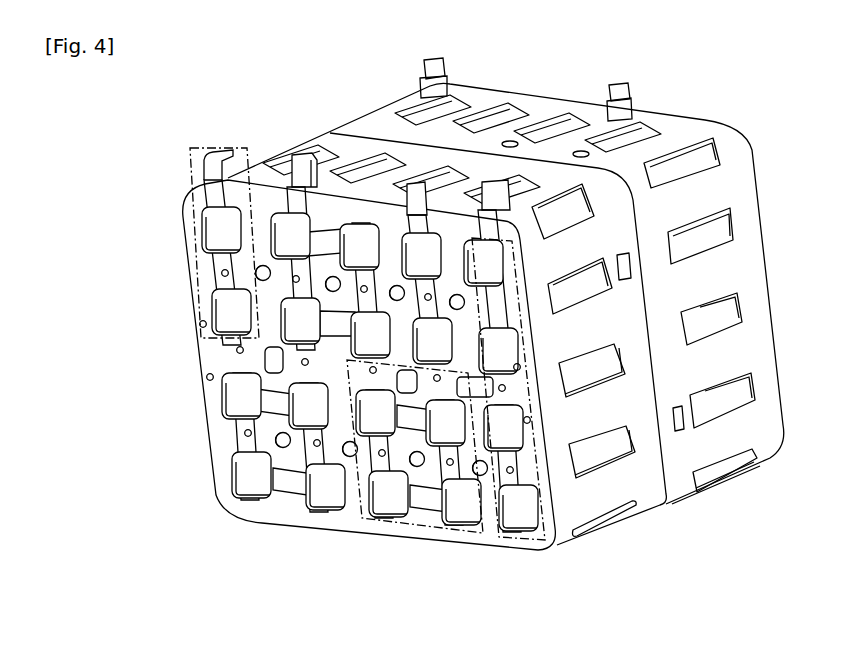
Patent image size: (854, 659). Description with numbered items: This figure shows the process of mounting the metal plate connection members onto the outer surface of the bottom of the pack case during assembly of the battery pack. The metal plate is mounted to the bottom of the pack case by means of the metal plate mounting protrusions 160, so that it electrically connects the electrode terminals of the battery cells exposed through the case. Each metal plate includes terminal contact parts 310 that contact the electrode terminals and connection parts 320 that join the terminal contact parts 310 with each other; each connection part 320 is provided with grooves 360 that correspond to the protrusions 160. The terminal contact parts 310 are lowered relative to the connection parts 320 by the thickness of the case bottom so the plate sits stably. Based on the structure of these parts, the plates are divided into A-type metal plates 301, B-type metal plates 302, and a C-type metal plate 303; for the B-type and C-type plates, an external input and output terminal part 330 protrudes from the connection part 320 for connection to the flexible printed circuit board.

The metal plate mounting protrusion 160 is at (243, 434).
The A-type metal plate 301 is at (197, 274).
The B-type metal plate 302 is at (449, 532).
The C-type metal plate 303 is at (554, 541).
The terminal contact part 310 is at (228, 308).
The connection part 320 is at (574, 528).
The external input and output terminal part 330 is at (257, 362).
The groove 360 is at (280, 483).